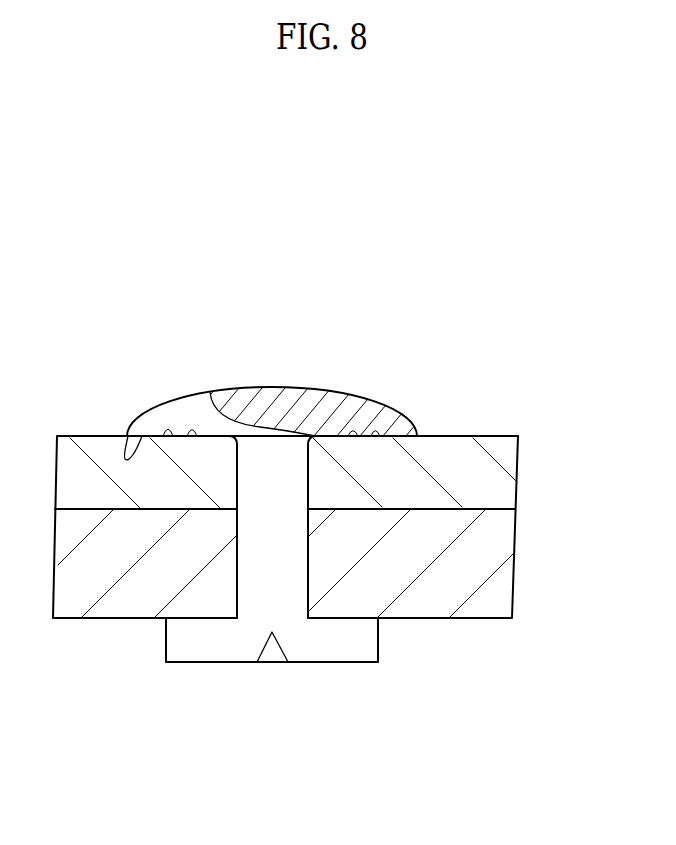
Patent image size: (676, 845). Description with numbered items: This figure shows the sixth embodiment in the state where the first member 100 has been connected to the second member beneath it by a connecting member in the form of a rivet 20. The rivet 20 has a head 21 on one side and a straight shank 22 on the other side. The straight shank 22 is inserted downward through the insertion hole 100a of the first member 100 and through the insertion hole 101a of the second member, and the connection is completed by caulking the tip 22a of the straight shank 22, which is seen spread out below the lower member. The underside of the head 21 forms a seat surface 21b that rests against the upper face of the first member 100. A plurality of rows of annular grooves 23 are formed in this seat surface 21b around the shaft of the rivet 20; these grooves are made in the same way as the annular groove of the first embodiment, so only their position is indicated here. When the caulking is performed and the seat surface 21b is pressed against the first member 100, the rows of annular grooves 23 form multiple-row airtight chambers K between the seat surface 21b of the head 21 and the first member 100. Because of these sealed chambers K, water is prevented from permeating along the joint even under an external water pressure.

The rivet 20 is at (304, 387).
The head 21 is at (258, 396).
The seat surface 21b is at (122, 450).
The straight shank 22 is at (287, 546).
The tip 22a is at (222, 641).
The annular grooves 23 is at (373, 440).
The first member 100 is at (73, 458).
The insertion hole 100a is at (256, 483).
The insertion hole 101a is at (256, 553).
The airtight chambers K is at (377, 428).